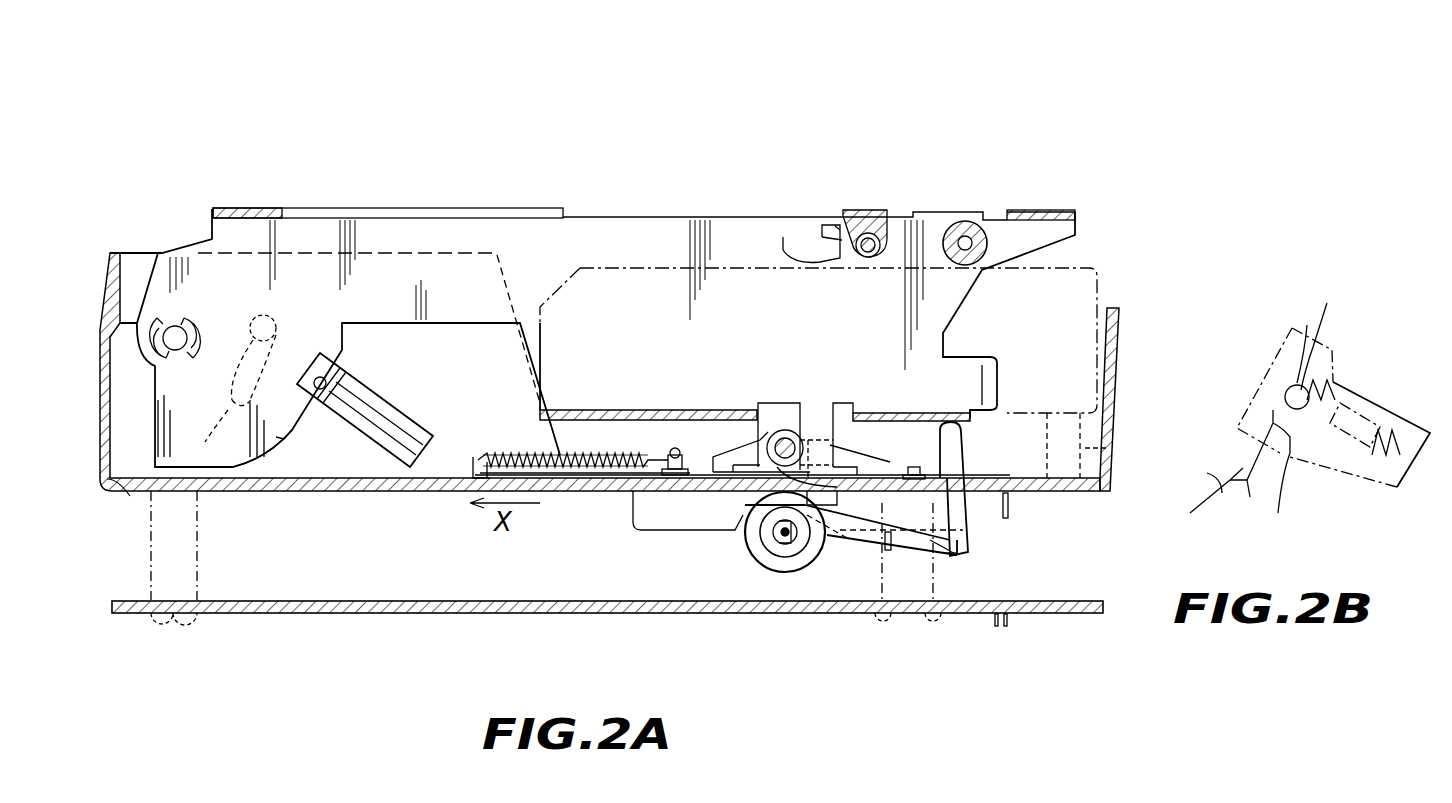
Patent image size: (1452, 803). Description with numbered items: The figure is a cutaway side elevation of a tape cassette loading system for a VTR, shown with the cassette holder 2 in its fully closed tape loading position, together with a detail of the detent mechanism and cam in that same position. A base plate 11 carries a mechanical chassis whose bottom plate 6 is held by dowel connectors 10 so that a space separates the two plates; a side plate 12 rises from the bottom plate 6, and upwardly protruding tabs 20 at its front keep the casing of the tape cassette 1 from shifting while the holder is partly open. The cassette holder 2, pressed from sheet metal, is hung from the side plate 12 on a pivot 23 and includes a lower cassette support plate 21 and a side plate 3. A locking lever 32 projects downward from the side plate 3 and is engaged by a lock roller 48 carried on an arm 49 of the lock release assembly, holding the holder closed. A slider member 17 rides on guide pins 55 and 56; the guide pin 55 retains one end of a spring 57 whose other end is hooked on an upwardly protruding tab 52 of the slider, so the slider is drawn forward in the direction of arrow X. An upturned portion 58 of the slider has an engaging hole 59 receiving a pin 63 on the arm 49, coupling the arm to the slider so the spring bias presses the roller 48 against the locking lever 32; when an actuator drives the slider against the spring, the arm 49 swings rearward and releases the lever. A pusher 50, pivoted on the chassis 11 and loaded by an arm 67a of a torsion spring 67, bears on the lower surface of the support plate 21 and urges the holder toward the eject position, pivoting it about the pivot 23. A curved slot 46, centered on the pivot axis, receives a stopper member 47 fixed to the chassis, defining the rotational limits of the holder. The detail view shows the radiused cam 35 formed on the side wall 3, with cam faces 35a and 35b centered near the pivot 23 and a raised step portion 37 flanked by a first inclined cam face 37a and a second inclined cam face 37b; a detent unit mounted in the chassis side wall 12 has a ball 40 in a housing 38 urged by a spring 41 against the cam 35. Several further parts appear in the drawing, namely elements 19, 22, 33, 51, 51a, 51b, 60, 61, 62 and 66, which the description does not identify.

In FIG. 2A, the tape cassette 1 is at (1092, 262).
In FIG. 2A, the cassette holder 2 is at (430, 208).
In FIG. 2A, the side plate of the cassette holder 3 is at (595, 216).
In FIG. 2A, the bottom plate 6 is at (118, 470).
In FIG. 2A, the dowel connectors 10 is at (160, 555).
In FIG. 2A, the base plate 11 is at (1058, 600).
In FIG. 2A, the side plate 12 is at (345, 462).
In FIG. 2A, the slider member 17 is at (645, 510).
In FIG. 2A, the side member 19 is at (1107, 448).
In FIG. 2A, the upwardly protruding tabs 20 is at (1117, 345).
In FIG. 2A, the lower cassette support plate 21 is at (592, 410).
In FIG. 2A, the pivot pin 22 is at (965, 222).
In FIG. 2A, the pivot 23 is at (165, 340).
In FIG. 2A, the locking lever 32 is at (845, 470).
In FIG. 2A, the top plate portions 33 is at (265, 208).
In FIG. 2A, the radiused cam 35 is at (237, 478).
In FIG. 2B, the radiused cam 35 is at (1290, 353).
In FIG. 2B, the cam face 35a is at (1222, 493).
In FIG. 2B, the cam face 35b is at (1327, 303).
In FIG. 2A, the raised step portion 37 is at (292, 458).
In FIG. 2B, the raised step portion 37 is at (1265, 480).
In FIG. 2B, the first inclined cam face 37a is at (1284, 498).
In FIG. 2B, the second inclined cam face 37b is at (1225, 480).
In FIG. 2A, the housing 38 is at (395, 442).
In FIG. 2B, the housing 38 is at (1293, 447).
In FIG. 2B, the ball 40 is at (1307, 388).
In FIG. 2B, the spring 41 is at (1397, 447).
In FIG. 2A, the curved slot 46 is at (211, 428).
In FIG. 2A, the stopper member 47 is at (277, 325).
In FIG. 2A, the lock roller 48 is at (783, 440).
In FIG. 2A, the arm 49 is at (787, 537).
In FIG. 2A, the pusher 50 is at (963, 440).
In FIG. 2A, the arm 51 is at (850, 548).
In FIG. 2A, the arm end 51a is at (945, 552).
In FIG. 2A, the arm end 51b is at (952, 556).
In FIG. 2A, the upwardly protruding tab 52 is at (472, 458).
In FIG. 2A, the guide pin 55 is at (675, 452).
In FIG. 2A, the guide pin 56 is at (913, 466).
In FIG. 2A, the spring 57 is at (510, 452).
In FIG. 2A, the upturned portion 58 is at (880, 413).
In FIG. 2A, the engaging hole 59 is at (777, 440).
In FIG. 2A, the pawl 60 is at (740, 455).
In FIG. 2A, the arm 61 is at (740, 502).
In FIG. 2A, the bracket 62 is at (820, 430).
In FIG. 2A, the pin 63 is at (765, 557).
In FIG. 2A, the pin 66 is at (985, 493).
In FIG. 2A, the torsion spring 67 is at (745, 548).
In FIG. 2A, the arm of torsion spring 67a is at (888, 552).